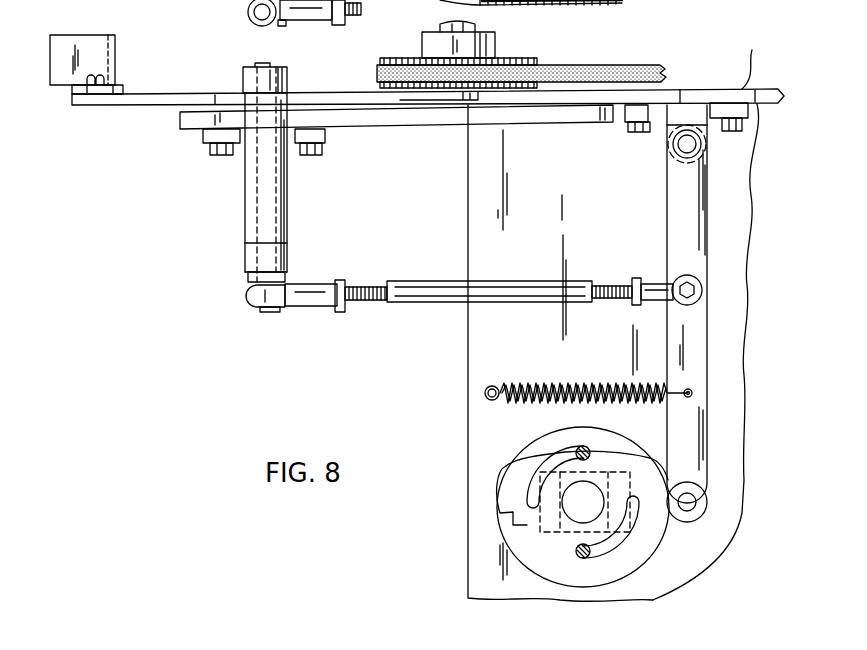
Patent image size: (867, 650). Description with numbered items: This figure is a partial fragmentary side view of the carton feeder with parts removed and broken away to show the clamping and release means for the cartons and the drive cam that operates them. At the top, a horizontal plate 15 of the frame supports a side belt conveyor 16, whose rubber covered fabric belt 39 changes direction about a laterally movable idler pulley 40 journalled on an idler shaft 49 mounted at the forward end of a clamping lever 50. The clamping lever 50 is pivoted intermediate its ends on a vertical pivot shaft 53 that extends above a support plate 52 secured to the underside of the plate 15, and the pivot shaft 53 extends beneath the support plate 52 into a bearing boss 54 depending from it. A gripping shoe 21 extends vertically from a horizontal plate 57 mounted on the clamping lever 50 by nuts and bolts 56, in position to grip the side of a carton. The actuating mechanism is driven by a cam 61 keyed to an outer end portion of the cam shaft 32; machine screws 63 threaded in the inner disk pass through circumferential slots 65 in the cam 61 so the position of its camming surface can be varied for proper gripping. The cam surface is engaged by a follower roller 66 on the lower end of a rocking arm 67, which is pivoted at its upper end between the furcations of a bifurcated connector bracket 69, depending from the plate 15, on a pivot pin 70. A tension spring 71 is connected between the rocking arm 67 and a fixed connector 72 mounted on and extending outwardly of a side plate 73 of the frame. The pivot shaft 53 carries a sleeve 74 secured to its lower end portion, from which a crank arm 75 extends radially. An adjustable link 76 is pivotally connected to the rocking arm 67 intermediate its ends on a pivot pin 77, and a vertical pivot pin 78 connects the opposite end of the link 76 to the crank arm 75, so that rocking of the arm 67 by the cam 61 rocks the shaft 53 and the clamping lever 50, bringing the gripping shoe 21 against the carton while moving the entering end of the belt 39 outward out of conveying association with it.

The horizontal plate 15 is at (709, 315).
The side belt conveyor 16 is at (594, 5).
The gripping shoe 21 is at (115, 40).
The cam shaft 32 is at (568, 516).
The belt 39 is at (580, 63).
The idler pulley 40 is at (396, 58).
The idler shaft 49 is at (470, 28).
The clamping lever 50 is at (326, 93).
The support plate 52 is at (392, 124).
The vertical pivot shaft 53 is at (270, 66).
The bearing boss 54 is at (250, 183).
The nuts and bolts 56 is at (105, 78).
The horizontal plate 57 is at (72, 95).
The cam 61 is at (545, 563).
The machine screw 63 is at (590, 452).
The circumferential slot 65 is at (547, 462).
The follower roller 66 is at (688, 518).
The rocking arm 67 is at (710, 418).
The bifurcated connector bracket 69 is at (692, 146).
The pivot pin 70 is at (680, 147).
The tension spring 71 is at (575, 386).
The fixed connector 72 is at (486, 388).
The side plate 73 is at (468, 424).
The sleeve 74 is at (250, 253).
The crank arm 75 is at (243, 0).
The adjustable link 76 is at (522, 280).
The pivot pin 77 is at (702, 291).
The vertical pivot pin 78 is at (258, 27).